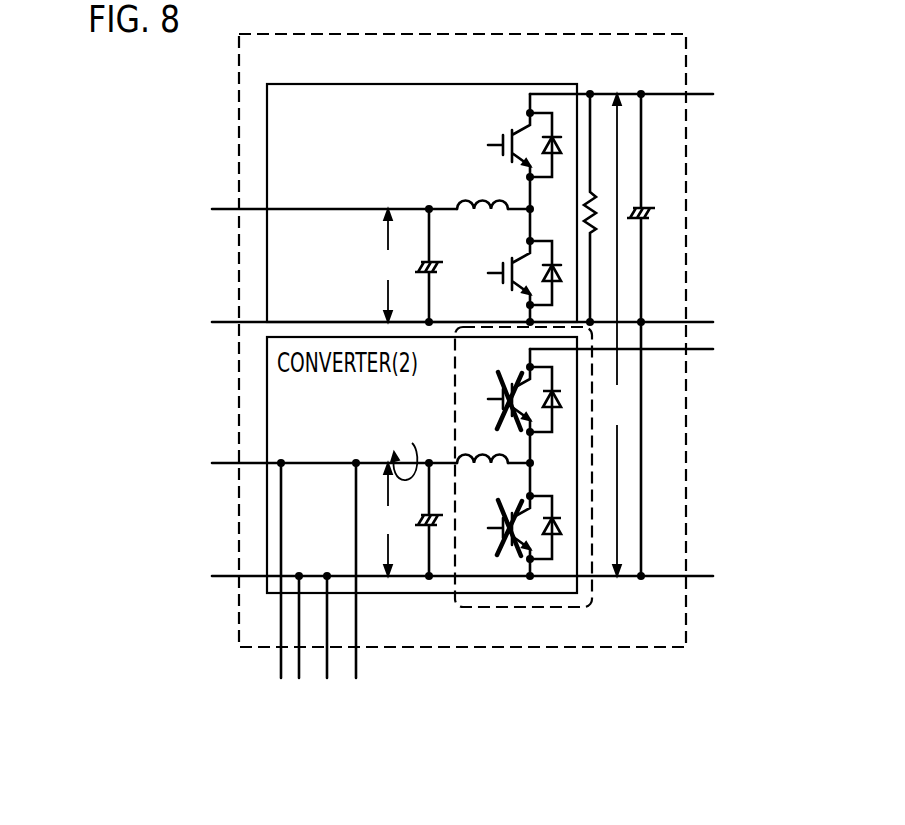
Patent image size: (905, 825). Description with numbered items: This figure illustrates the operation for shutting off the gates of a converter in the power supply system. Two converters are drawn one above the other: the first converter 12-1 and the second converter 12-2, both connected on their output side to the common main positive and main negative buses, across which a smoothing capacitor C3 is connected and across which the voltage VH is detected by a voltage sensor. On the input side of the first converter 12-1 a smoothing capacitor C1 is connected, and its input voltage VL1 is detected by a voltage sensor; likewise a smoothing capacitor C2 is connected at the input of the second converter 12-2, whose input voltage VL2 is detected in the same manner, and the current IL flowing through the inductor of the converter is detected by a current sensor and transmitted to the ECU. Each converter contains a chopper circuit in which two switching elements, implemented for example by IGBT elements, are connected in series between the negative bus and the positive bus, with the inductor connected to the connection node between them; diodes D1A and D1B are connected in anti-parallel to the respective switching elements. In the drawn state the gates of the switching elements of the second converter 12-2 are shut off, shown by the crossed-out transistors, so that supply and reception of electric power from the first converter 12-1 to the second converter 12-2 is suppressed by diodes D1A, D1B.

The converter (1) 12-1 is at (385, 84).
The converter (2) 12-2 is at (537, 593).
The smoothing capacitor C1 is at (438, 273).
The smoothing capacitor C2 is at (438, 527).
The smoothing capacitor C3 is at (646, 206).
The input voltage VL(1) VL1 is at (384, 265).
The input voltage VL(2) VL2 is at (383, 519).
The voltage VH is at (615, 335).
The current IL is at (412, 443).
The diode D1A is at (553, 517).
The diode D1B is at (557, 412).